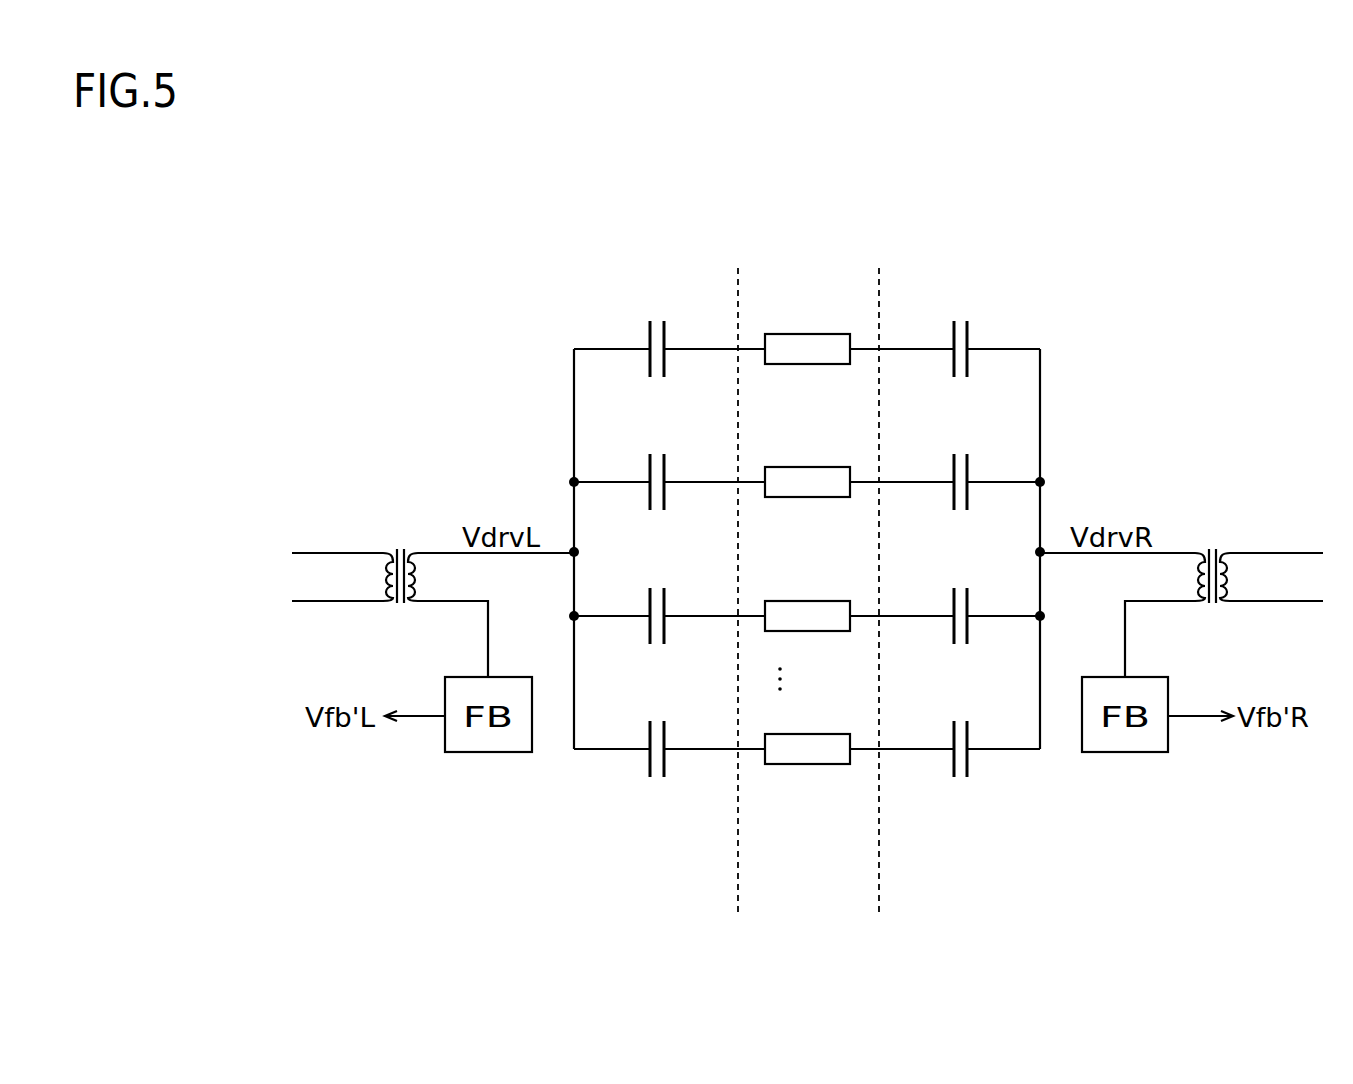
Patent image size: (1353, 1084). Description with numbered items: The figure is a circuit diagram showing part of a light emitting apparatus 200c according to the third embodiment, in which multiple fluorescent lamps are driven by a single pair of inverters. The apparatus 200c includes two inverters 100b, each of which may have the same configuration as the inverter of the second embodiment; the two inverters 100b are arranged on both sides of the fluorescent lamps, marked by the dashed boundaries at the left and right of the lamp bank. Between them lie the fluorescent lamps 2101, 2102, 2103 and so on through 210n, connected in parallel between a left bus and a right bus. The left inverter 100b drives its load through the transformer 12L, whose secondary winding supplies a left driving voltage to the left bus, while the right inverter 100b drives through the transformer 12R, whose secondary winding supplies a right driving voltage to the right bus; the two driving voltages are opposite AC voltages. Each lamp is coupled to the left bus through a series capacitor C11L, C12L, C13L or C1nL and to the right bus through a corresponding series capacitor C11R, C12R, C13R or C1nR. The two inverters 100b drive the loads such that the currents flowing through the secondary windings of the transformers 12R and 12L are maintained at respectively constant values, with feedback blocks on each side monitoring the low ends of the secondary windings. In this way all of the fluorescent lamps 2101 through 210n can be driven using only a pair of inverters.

The light emitting apparatus 200c is at (836, 227).
The inverter 100b is at (738, 914).
The transformer 12L is at (400, 549).
The transformer 12R is at (1213, 549).
The fluorescent lamp 2101 is at (806, 334).
The fluorescent lamp 2102 is at (806, 467).
The fluorescent lamp 2103 is at (806, 601).
The fluorescent lamp 210n is at (806, 734).
The capacitor C11L is at (685, 305).
The capacitor C12L is at (685, 438).
The capacitor C13L is at (685, 572).
The capacitor C1nL is at (685, 705).
The capacitor C11R is at (988, 305).
The capacitor C12R is at (988, 438).
The capacitor C13R is at (988, 572).
The capacitor C1nR is at (988, 705).